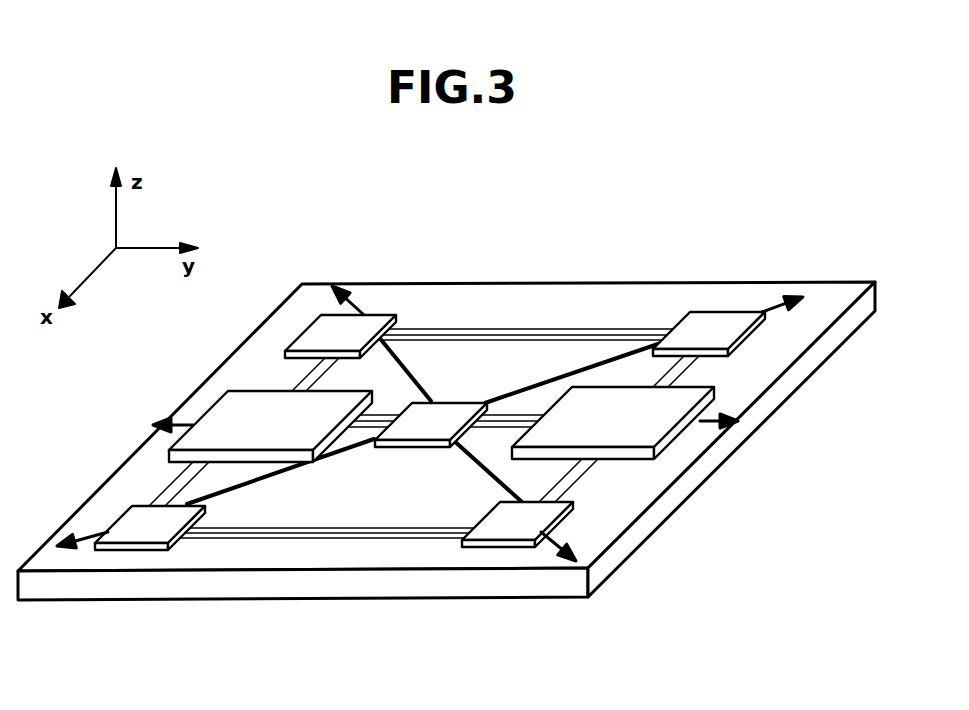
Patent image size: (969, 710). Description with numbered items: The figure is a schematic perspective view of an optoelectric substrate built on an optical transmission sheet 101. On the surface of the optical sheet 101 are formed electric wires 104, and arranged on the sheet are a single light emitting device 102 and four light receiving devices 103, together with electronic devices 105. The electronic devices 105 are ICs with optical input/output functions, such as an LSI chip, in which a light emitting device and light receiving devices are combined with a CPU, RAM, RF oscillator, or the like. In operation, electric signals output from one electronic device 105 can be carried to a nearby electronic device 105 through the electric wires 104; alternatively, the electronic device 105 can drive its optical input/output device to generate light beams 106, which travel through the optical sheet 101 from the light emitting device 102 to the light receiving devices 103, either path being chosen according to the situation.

The optical transmission sheet 101 is at (376, 583).
The light emitting device 102 is at (415, 425).
The light receiving device 103 is at (318, 338).
The electric wires 104 is at (510, 418).
The electronic device 105 is at (230, 425).
The light beam 106 is at (528, 385).